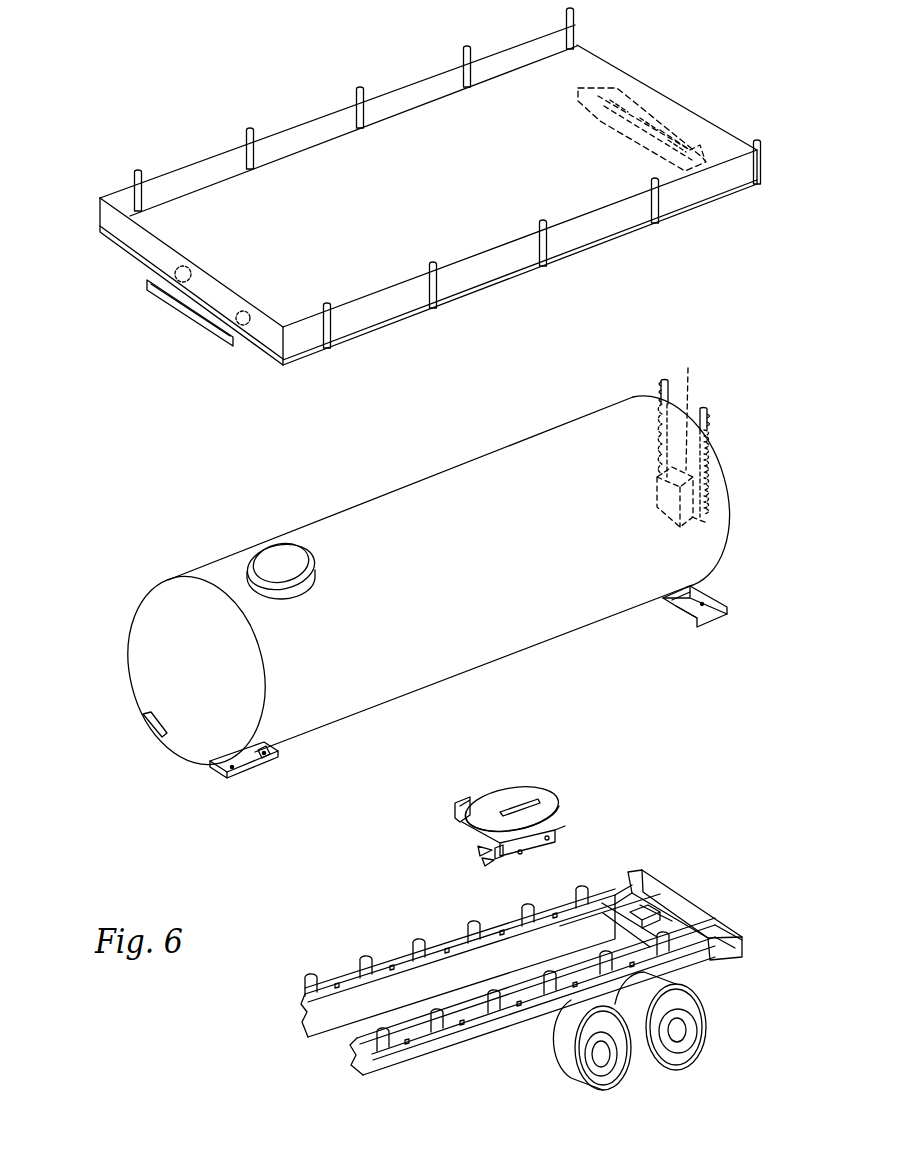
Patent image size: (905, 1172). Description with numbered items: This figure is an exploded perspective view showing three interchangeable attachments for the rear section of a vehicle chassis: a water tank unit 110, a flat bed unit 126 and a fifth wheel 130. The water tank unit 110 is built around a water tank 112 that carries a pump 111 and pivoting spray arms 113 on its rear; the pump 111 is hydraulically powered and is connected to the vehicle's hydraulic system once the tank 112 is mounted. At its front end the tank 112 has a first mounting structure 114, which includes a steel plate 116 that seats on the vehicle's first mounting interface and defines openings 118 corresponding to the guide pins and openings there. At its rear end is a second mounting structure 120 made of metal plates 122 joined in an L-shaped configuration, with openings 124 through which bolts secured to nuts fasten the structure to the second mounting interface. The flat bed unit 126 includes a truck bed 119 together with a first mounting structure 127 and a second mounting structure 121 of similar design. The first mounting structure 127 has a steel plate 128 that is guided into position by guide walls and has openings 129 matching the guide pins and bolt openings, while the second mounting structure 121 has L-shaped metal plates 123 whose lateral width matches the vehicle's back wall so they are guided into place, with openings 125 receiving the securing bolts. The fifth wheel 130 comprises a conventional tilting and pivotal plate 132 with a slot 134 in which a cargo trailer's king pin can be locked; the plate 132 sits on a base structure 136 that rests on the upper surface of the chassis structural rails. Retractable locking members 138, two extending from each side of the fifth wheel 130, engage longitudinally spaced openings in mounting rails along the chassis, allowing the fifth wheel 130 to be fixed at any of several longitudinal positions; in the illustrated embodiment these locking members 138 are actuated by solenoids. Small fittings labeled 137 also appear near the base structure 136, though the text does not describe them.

The water tank unit 110 is at (211, 537).
The pump 111 is at (682, 435).
The water tank 112 is at (527, 610).
The pivoting spray arms 113 is at (663, 379).
The first mounting structure 114 is at (258, 778).
The steel plate 116 is at (237, 770).
The openings 118 is at (266, 755).
The truck bed 119 is at (317, 167).
The second mounting structure 120 is at (728, 629).
The second mounting structure 121 is at (626, 92).
The metal plates 122 is at (697, 593).
The metal plates 123 is at (690, 150).
The openings 124 is at (704, 604).
The openings 125 is at (660, 114).
The flat bed unit 126 is at (446, 318).
The first mounting structure 127 is at (158, 308).
The steel plate 128 is at (182, 307).
The openings 129 is at (182, 268).
The fifth wheel 130 is at (441, 791).
The tilting and pivotal plate 132 is at (503, 793).
The slot 134 is at (533, 797).
The base structure 136 is at (497, 856).
The clips 137 is at (482, 860).
The locking members 138 is at (519, 856).